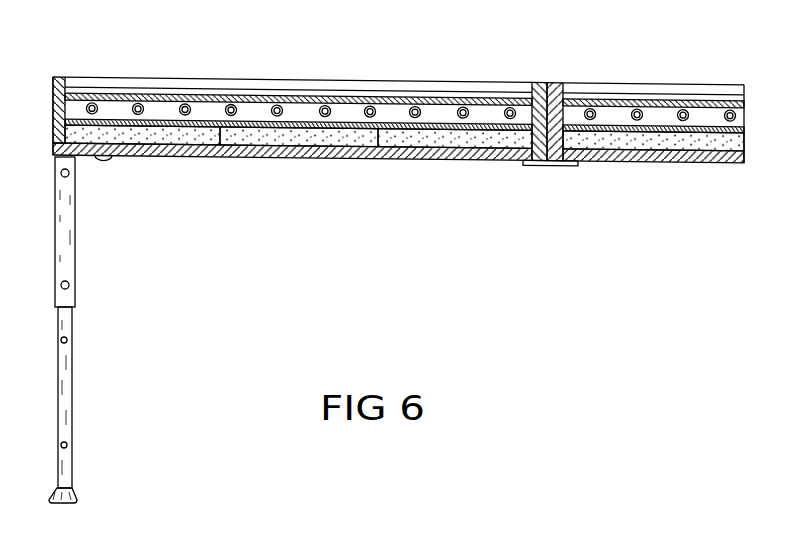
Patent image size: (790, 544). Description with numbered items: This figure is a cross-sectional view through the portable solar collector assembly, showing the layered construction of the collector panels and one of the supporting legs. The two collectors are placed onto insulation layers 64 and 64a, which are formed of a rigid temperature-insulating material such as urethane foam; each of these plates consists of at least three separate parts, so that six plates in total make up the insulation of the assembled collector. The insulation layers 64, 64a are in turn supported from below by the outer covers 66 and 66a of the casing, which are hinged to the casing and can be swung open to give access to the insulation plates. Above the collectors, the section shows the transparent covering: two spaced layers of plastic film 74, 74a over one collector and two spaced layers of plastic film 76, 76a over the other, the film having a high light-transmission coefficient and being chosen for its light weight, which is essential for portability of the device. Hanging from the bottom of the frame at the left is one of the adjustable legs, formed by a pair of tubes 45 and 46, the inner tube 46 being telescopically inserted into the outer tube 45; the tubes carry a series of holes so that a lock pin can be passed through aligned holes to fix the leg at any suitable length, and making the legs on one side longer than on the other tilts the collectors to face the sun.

The plastic film layer 74 is at (167, 80).
The plastic film layer 74a is at (308, 86).
The plastic film layer 76 is at (592, 86).
The plastic film layer 76a is at (653, 88).
The outer cover 66 is at (282, 160).
The insulation layer 64 is at (402, 138).
The outer cover 66a is at (655, 160).
The insulation layer 64a is at (703, 137).
The tube 45 is at (75, 277).
The tube 46 is at (72, 457).